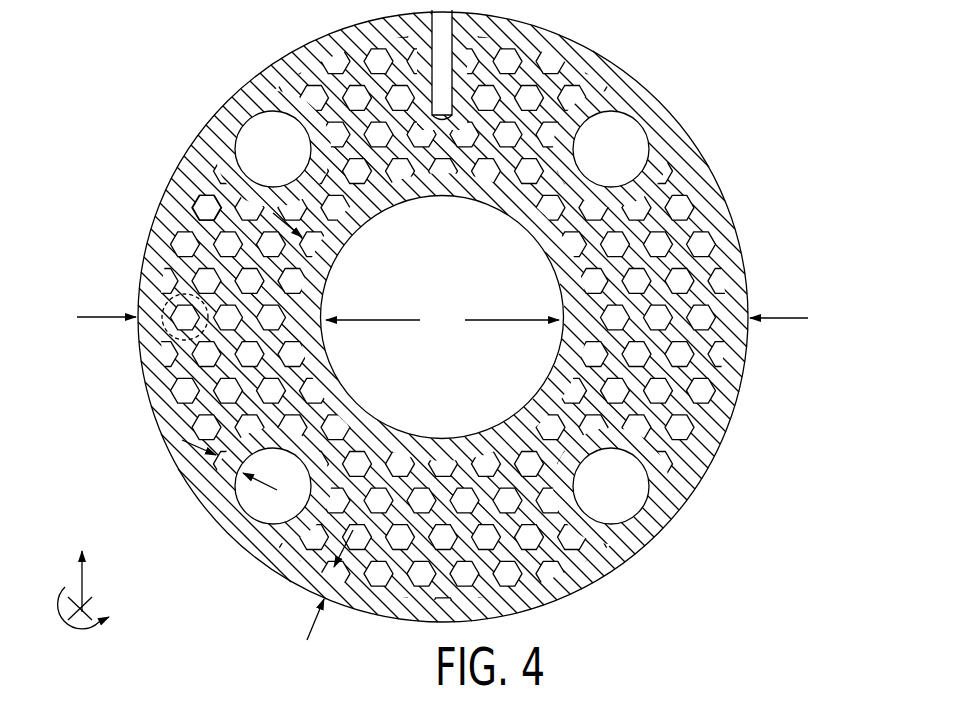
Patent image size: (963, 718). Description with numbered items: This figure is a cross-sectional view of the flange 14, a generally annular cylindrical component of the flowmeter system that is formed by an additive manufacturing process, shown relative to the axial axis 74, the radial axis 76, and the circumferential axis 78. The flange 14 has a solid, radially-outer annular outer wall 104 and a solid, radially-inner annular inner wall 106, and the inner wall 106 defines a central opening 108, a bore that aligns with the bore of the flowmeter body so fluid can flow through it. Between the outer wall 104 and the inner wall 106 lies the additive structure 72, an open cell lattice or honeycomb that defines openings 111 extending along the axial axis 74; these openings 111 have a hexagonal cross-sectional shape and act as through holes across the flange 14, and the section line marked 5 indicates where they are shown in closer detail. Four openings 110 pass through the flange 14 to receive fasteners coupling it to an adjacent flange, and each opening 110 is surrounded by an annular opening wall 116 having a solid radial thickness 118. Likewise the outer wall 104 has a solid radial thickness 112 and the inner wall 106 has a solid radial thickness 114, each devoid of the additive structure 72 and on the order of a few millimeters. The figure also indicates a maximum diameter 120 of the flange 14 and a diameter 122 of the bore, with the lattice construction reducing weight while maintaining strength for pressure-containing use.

The flange 14 is at (221, 46).
The additive structure 72 is at (227, 193).
The axial axis 74 is at (87, 610).
The radial axis 76 is at (80, 585).
The circumferential axis 78 is at (77, 637).
The outer wall 104 is at (562, 40).
The inner wall 106 is at (407, 203).
The opening 108 is at (525, 360).
The openings 110 is at (627, 117).
The openings 111 is at (202, 212).
The thickness 112 is at (312, 622).
The thickness 114 is at (339, 259).
The opening wall 116 is at (235, 488).
The radial thickness 118 is at (207, 457).
The maximum diameter 120 is at (783, 318).
The diameter 122 is at (442, 320).
The section line 5- 5 is at (168, 302).